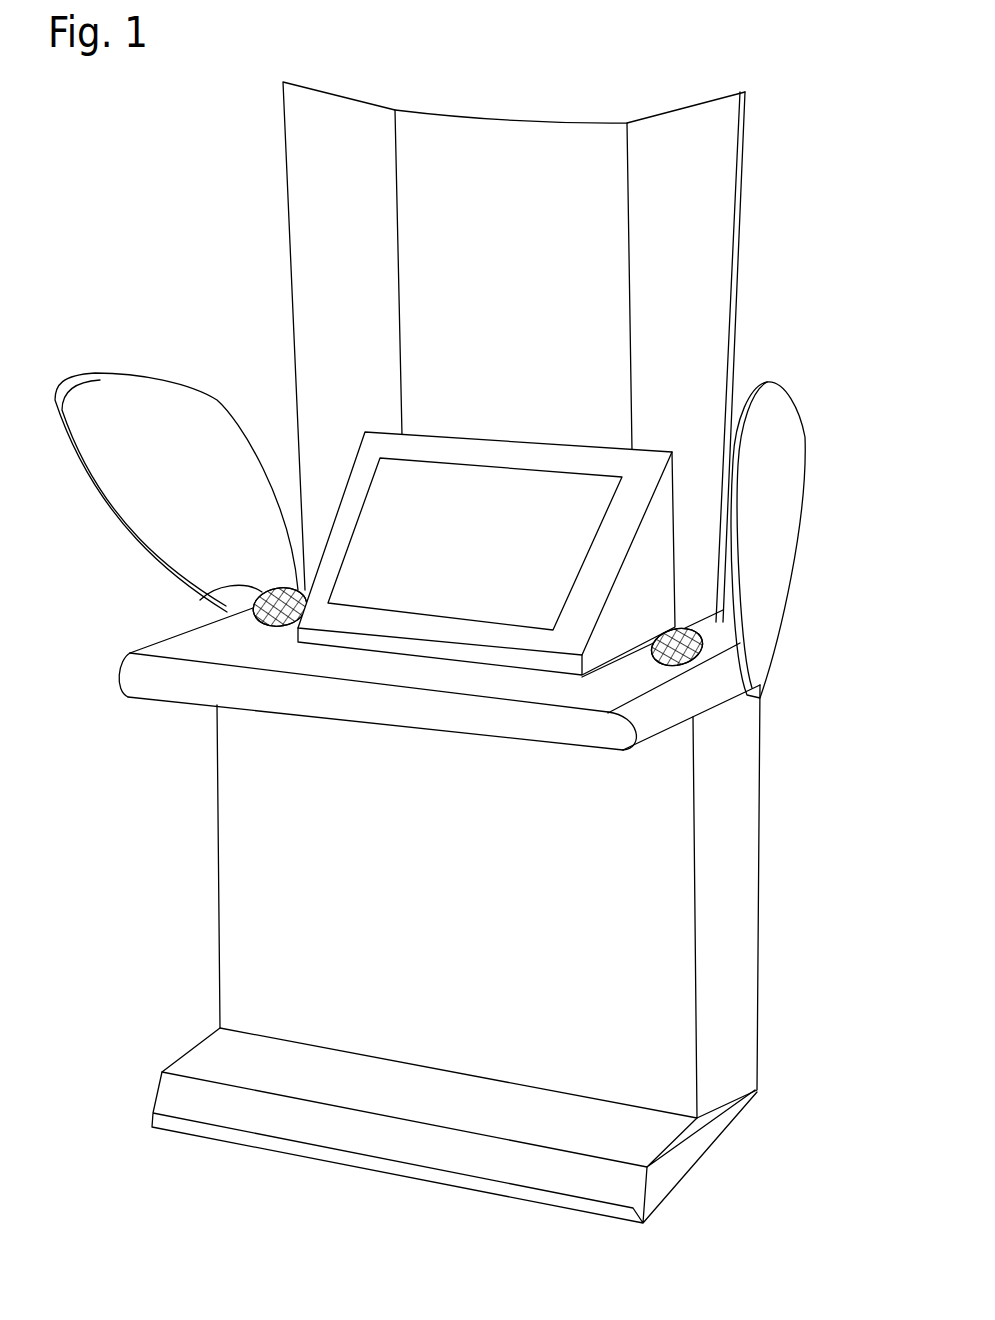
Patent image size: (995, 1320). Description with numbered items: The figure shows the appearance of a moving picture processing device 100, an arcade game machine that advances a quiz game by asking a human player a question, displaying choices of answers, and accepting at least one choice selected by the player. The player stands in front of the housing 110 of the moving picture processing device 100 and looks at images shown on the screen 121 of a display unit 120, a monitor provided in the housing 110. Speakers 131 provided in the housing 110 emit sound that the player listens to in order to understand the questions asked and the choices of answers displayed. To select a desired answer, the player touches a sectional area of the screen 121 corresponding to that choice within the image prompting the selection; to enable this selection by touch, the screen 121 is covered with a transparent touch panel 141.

The moving picture processing device 100 is at (768, 77).
The housing 110 is at (733, 818).
The display unit 120 is at (571, 458).
The screen 121 is at (447, 487).
The speakers 131 is at (203, 590).
The transparent touch panel 141 is at (509, 487).